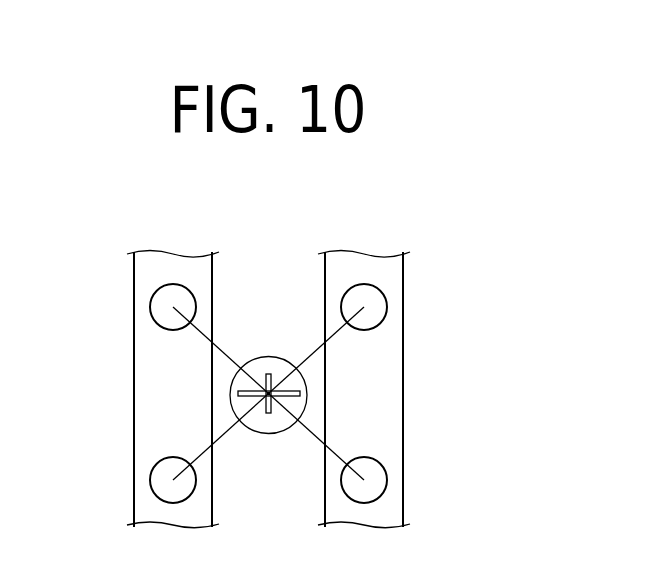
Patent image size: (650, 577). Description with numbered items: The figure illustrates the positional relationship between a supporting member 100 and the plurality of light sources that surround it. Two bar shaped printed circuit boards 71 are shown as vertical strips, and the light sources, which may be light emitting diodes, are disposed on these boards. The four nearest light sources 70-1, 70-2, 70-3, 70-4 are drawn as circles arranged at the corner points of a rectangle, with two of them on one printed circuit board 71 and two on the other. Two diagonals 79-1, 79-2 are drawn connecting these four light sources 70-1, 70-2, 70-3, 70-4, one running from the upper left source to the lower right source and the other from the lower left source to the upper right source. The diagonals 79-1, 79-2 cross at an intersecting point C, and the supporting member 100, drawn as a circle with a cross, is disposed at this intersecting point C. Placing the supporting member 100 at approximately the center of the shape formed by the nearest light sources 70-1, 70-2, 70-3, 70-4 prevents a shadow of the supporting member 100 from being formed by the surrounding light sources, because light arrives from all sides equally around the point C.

The supporting member 100 is at (256, 338).
The light source 70-1 is at (385, 298).
The light source 70-2 is at (385, 478).
The light source 70-3 is at (150, 479).
The light source 70-4 is at (150, 300).
The printed circuit board 71 is at (142, 393).
The diagonal 79-1 is at (311, 430).
The diagonal 79-2 is at (222, 428).
The intersecting point C is at (266, 396).